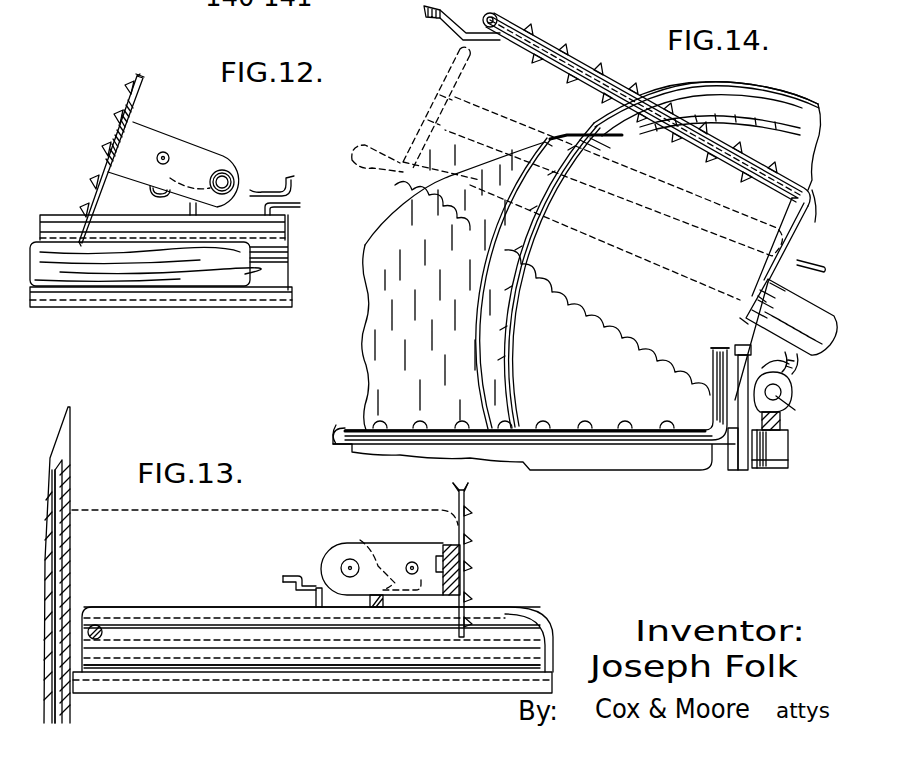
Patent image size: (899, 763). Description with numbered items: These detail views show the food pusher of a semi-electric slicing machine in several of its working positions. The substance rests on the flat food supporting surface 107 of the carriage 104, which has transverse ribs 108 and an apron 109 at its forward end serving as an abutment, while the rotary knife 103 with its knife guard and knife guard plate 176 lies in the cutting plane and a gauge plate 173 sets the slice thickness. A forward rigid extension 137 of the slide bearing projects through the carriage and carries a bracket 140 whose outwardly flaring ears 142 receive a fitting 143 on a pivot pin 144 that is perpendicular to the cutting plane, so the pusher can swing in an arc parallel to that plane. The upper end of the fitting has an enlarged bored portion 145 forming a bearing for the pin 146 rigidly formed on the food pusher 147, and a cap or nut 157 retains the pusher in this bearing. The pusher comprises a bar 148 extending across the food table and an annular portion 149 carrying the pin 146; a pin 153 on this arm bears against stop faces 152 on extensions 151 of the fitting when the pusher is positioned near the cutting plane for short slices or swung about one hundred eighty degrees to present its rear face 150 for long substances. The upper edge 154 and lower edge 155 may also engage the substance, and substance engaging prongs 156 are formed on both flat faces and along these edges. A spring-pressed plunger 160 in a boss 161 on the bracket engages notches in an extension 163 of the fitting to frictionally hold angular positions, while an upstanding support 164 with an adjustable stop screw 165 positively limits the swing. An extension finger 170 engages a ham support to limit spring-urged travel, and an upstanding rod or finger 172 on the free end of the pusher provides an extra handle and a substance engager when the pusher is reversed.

In FIG. 14, the rotary knife 103 is at (648, 255).
In FIG. 13, the rotary knife 103 is at (81, 565).
In FIG. 12, the carriage 104 is at (180, 276).
In FIG. 14, the carriage 104 is at (327, 420).
In FIG. 13, the carriage 104 is at (312, 697).
In FIG. 14, the food supporting surface 107 is at (534, 433).
In FIG. 13, the food supporting surface 107 is at (312, 647).
In FIG. 14, the transverse ribs 108 is at (523, 412).
In FIG. 13, the transverse ribs 108 is at (312, 621).
In FIG. 12, the apron 109 is at (185, 252).
In FIG. 14, the apron 109 is at (537, 394).
In FIG. 13, the apron 109 is at (317, 621).
In FIG. 14, the forward rigid extension 137 is at (720, 465).
In FIG. 14, the bracket 140 is at (756, 423).
In FIG. 14, the outwardly flaring ears 142 is at (791, 392).
In FIG. 12, the fitting 143 is at (298, 208).
In FIG. 14, the fitting 143 is at (795, 371).
In FIG. 13, the fitting 143 is at (277, 596).
In FIG. 14, the pivot pin 144 is at (803, 409).
In FIG. 12, the enlarged bored portion 145 is at (250, 172).
In FIG. 14, the enlarged bored portion 145 is at (806, 278).
In FIG. 12, the pin 146 is at (240, 159).
In FIG. 13, the pin 146 is at (325, 558).
In FIG. 12, the food pusher 147 is at (111, 149).
In FIG. 14, the food pusher 147 is at (648, 109).
In FIG. 13, the food pusher 147 is at (482, 560).
In FIG. 12, the bar 148 is at (138, 129).
In FIG. 14, the bar 148 is at (613, 160).
In FIG. 13, the bar 148 is at (477, 566).
In FIG. 12, the annular portion 149 is at (173, 163).
In FIG. 14, the annular portion 149 is at (774, 247).
In FIG. 13, the annular portion 149 is at (265, 558).
In FIG. 12, the rear face 150 is at (157, 68).
In FIG. 13, the rear face 150 is at (436, 494).
In FIG. 12, the extensions 151 is at (221, 191).
In FIG. 14, the extensions 151 is at (725, 321).
In FIG. 13, the extensions 151 is at (252, 572).
In FIG. 12, the stop faces 152 is at (289, 174).
In FIG. 14, the stop faces 152 is at (744, 285).
In FIG. 13, the stop faces 152 is at (289, 566).
In FIG. 12, the pin 153 is at (176, 136).
In FIG. 14, the pin 153 is at (816, 196).
In FIG. 13, the pin 153 is at (400, 546).
In FIG. 12, the upper edge 154 is at (129, 49).
In FIG. 12, the lower edge 155 is at (62, 212).
In FIG. 12, the substance engaging prongs 156 is at (145, 196).
In FIG. 14, the substance engaging prongs 156 is at (597, 247).
In FIG. 13, the substance engaging prongs 156 is at (463, 526).
In FIG. 14, the cap or nut 157 is at (791, 326).
In FIG. 14, the spring-pressed plunger 160 is at (791, 449).
In FIG. 14, the boss 161 is at (791, 470).
In FIG. 14, the extension 163 is at (796, 427).
In FIG. 14, the upstanding support 164 is at (710, 344).
In FIG. 14, the adjustable stop screw 165 is at (706, 334).
In FIG. 14, the extension finger 170 is at (426, 89).
In FIG. 14, the upstanding rod or finger 172 is at (567, 150).
In FIG. 14, the gauge plate 173 is at (431, 286).
In FIG. 14, the knife guard and knife guard plate 176 is at (729, 85).
In FIG. 13, the knife guard and knife guard plate 176 is at (86, 592).